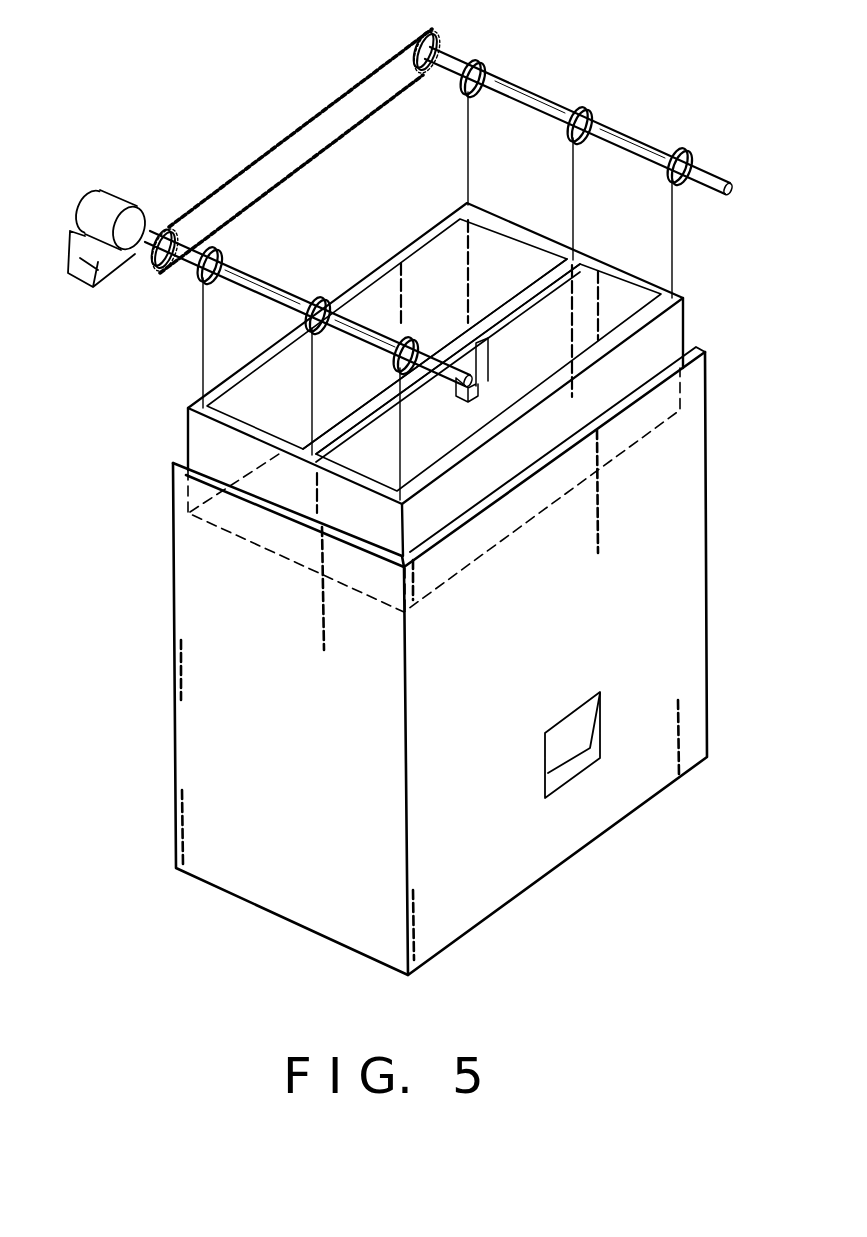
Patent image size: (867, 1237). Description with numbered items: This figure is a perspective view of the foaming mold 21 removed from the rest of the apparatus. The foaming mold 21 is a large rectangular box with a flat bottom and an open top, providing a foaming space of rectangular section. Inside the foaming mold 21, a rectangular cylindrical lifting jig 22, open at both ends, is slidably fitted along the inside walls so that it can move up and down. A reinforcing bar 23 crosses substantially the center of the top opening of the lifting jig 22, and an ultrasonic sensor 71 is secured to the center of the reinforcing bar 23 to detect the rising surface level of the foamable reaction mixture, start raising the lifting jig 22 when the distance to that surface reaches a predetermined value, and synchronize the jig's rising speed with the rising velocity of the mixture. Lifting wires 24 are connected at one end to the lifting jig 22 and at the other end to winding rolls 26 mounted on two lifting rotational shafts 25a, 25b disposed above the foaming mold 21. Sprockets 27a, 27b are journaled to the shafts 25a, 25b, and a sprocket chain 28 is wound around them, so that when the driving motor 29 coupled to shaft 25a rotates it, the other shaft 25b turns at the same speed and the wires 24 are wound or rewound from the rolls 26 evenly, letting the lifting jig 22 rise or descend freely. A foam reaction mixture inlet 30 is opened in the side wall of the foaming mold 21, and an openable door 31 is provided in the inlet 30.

The foaming mold 21 is at (207, 714).
The lifting jig 22 is at (670, 336).
The reinforcing bar 23 is at (540, 284).
The lifting wires 24 is at (468, 158).
The lifting rotational shaft 25a is at (292, 286).
The lifting rotational shaft 25b is at (647, 130).
The winding rolls 26 is at (482, 66).
The sprocket 27a is at (163, 230).
The sprocket 27b is at (427, 40).
The sprocket chain 28 is at (280, 150).
The driving motor 29 is at (96, 196).
The foam reaction mixture inlet 30 is at (587, 758).
The openable door 31 is at (570, 727).
The ultrasonic sensor 71 is at (498, 370).